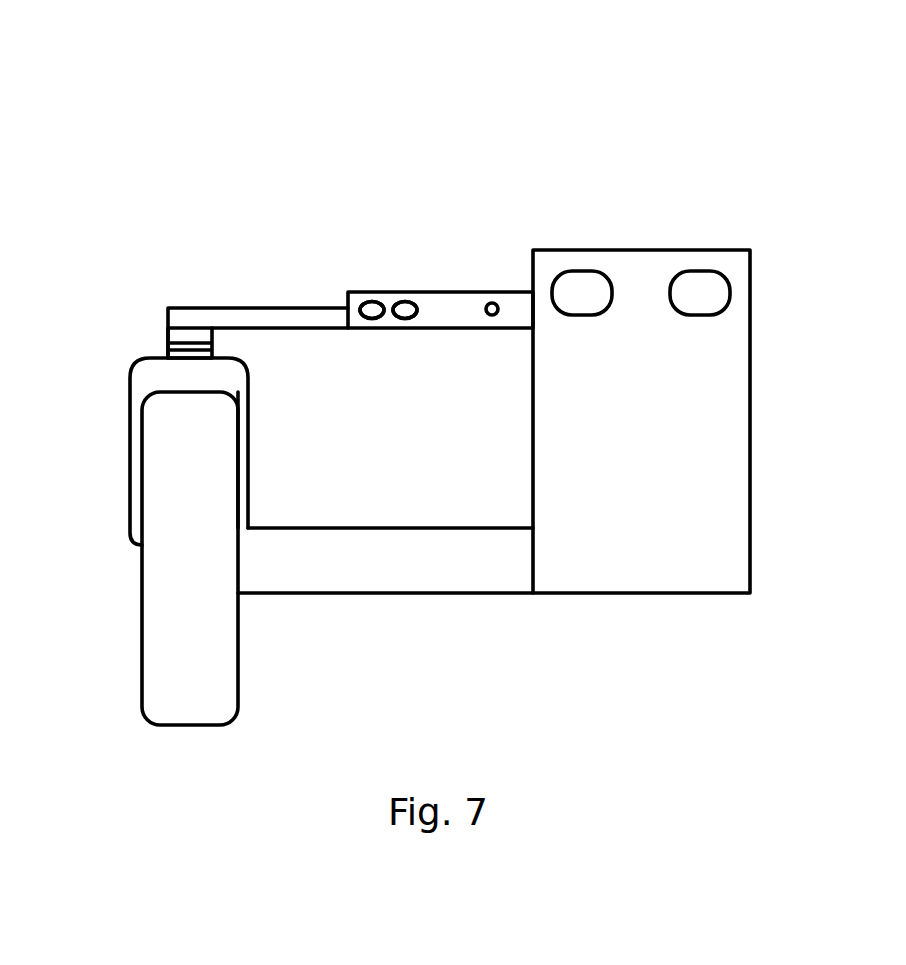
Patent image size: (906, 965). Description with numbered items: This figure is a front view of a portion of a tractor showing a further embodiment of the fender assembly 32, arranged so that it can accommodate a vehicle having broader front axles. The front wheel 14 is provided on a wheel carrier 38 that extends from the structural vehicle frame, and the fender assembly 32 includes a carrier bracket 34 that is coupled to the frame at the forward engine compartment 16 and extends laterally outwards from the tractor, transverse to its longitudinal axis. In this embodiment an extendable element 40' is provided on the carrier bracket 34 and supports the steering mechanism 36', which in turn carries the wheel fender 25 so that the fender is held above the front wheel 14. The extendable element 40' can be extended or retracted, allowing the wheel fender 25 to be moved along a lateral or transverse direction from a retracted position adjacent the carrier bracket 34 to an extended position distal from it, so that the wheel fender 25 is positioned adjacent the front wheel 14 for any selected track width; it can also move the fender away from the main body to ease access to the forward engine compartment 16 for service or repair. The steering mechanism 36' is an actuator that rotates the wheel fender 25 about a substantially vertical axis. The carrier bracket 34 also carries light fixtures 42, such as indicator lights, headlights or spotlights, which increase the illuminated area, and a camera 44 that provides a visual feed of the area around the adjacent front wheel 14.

The fender assembly 32 is at (223, 163).
The extendable element 40' is at (258, 264).
The steering mechanism 36' is at (155, 365).
The front wheel 14 is at (173, 665).
The carrier bracket 34 is at (456, 313).
The light fixtures 42 is at (382, 267).
The camera 44 is at (498, 282).
The forward engine compartment 16 is at (690, 408).
The wheel carrier 38 is at (510, 568).
The wheel fender 25 is at (250, 402).